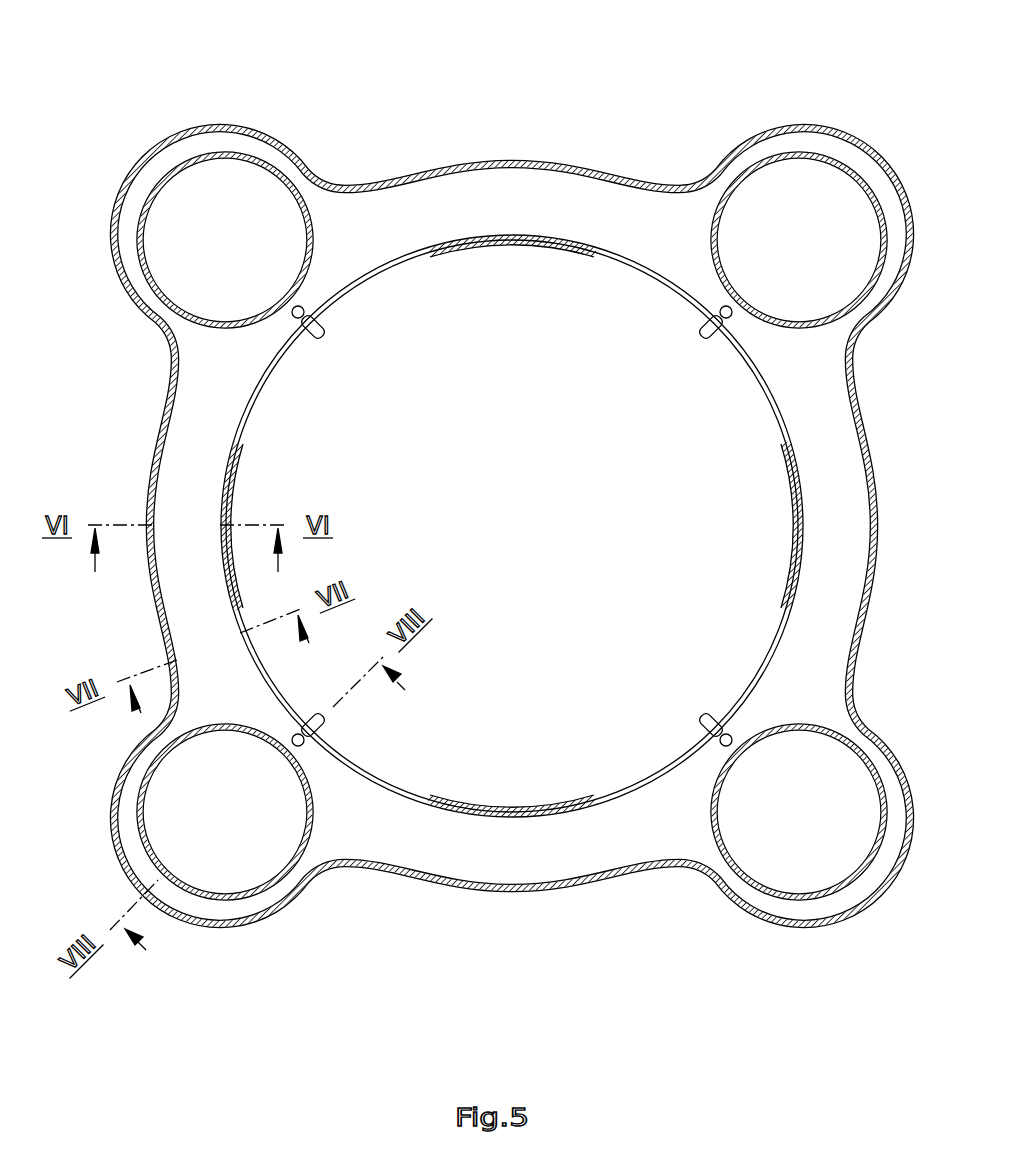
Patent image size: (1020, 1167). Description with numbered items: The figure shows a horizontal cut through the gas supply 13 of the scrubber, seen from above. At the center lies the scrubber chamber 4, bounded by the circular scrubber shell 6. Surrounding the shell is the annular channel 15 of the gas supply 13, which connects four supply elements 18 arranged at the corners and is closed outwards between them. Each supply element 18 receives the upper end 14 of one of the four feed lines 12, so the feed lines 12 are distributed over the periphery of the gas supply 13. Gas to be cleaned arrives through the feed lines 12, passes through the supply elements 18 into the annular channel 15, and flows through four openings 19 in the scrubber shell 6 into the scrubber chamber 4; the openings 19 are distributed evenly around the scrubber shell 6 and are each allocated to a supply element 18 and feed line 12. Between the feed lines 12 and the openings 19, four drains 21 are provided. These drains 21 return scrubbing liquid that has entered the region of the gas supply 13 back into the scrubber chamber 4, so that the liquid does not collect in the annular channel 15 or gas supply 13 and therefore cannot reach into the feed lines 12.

The gas supply 13 is at (571, 100).
The supply element 18 is at (248, 130).
The upper end of feed line 14 is at (190, 168).
The feed line 12 is at (216, 288).
The annular channel 15 is at (176, 501).
The scrubber shell 6 is at (520, 247).
The opening 19 is at (385, 268).
The drain 21 is at (321, 338).
The scrubber chamber 4 is at (566, 541).